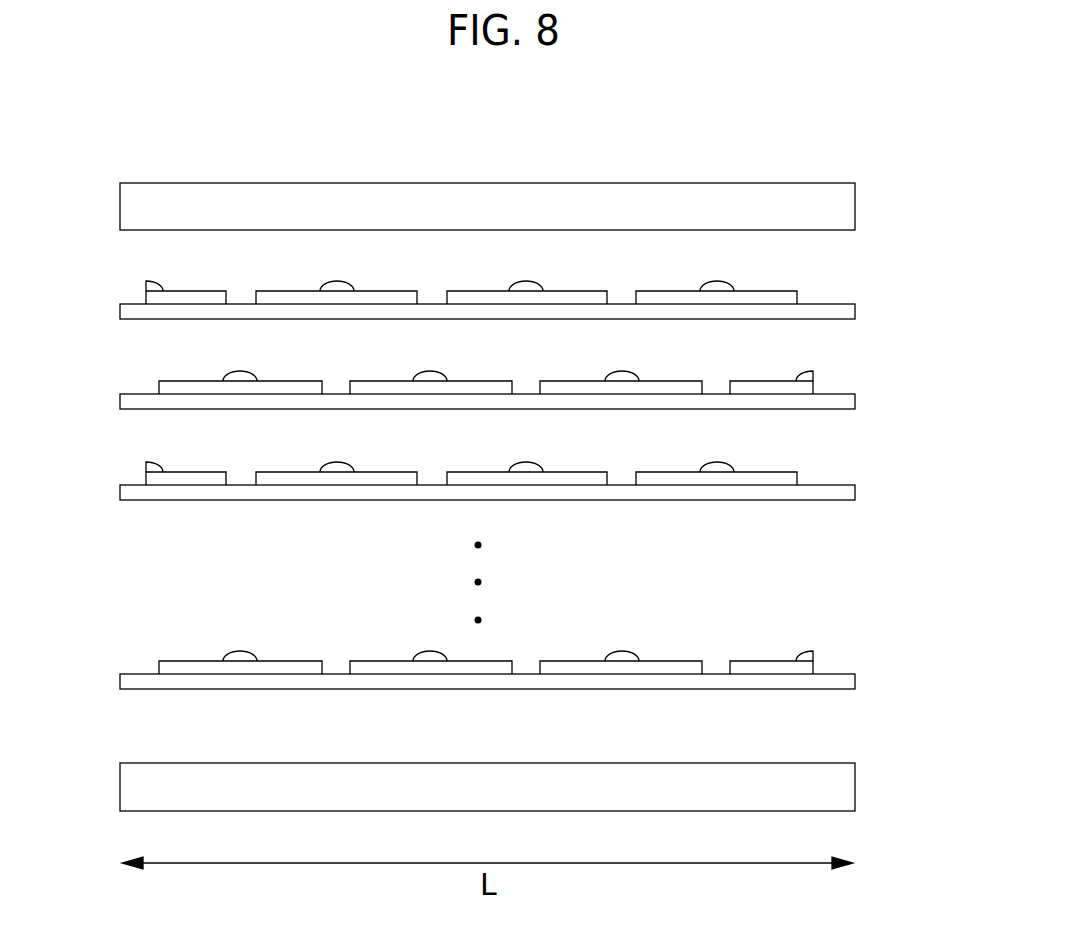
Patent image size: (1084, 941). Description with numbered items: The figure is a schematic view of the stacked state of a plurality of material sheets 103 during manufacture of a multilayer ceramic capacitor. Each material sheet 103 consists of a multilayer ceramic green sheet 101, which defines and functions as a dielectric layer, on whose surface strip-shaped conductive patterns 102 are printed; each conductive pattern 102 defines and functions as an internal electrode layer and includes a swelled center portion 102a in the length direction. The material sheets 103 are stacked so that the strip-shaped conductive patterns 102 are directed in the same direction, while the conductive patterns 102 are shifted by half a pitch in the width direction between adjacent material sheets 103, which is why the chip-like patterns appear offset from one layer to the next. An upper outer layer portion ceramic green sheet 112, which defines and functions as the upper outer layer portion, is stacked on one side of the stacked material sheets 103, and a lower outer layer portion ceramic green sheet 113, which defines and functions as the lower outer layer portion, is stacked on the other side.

The multilayer ceramic green sheet 101 is at (838, 310).
The conductive pattern 102 is at (185, 297).
The swelled center portion 102a is at (717, 281).
The material sheet 103 is at (502, 401).
The upper outer layer portion ceramic green sheet 112 is at (846, 175).
The lower outer layer portion ceramic green sheet 113 is at (847, 756).